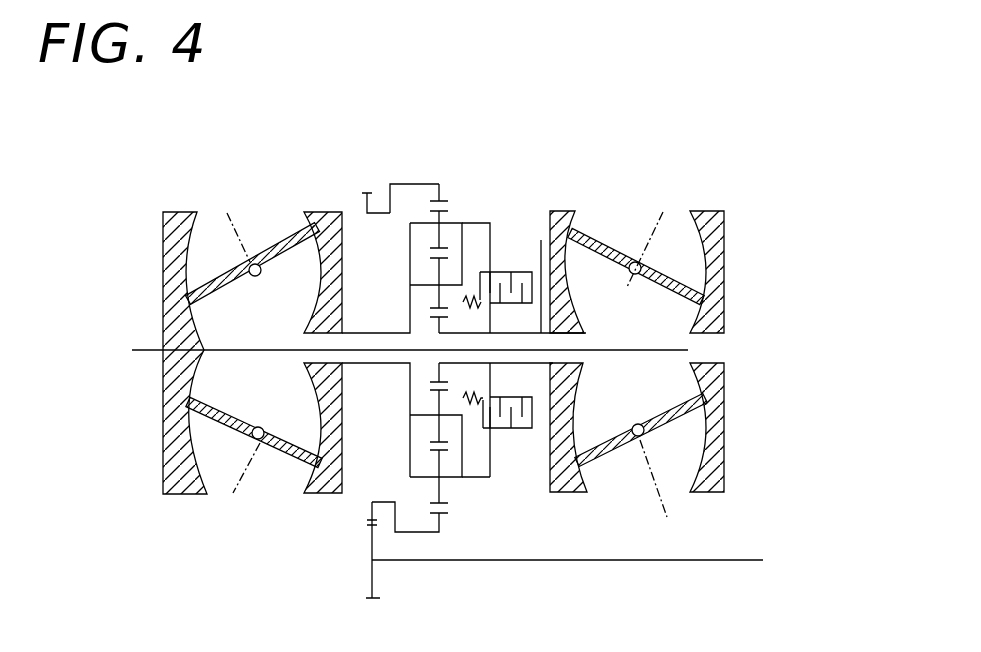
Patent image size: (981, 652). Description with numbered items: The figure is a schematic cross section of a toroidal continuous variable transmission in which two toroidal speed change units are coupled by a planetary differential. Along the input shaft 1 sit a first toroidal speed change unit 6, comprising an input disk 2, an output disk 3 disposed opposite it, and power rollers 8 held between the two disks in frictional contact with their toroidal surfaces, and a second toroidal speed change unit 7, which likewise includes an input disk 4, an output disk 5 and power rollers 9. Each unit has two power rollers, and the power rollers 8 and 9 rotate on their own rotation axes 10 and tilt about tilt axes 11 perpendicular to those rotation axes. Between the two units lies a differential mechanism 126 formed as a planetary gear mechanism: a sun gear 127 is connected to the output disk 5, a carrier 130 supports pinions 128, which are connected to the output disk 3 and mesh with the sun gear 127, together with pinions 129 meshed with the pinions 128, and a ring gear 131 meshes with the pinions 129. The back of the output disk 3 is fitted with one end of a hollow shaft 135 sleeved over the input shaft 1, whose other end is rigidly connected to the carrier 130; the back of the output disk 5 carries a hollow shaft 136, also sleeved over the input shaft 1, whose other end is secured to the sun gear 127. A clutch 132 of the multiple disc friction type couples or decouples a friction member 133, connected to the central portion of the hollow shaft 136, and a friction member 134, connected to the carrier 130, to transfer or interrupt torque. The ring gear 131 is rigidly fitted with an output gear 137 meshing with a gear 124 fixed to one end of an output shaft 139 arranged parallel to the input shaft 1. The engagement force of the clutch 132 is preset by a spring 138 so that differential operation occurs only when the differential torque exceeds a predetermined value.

The input shaft 1 is at (157, 352).
The input disk 2 is at (166, 258).
The output disk 3 is at (328, 232).
The input disk 4 is at (717, 250).
The output disk 5 is at (560, 222).
The toroidal speed change unit 6 is at (254, 313).
The toroidal speed change unit 7 is at (637, 313).
The power rollers 8 is at (254, 351).
The power rollers 9 is at (600, 245).
The rotation axes 10 is at (453, 356).
The tilt axes 11 is at (255, 278).
The gear 124 is at (373, 580).
The differential mechanism 126 is at (422, 182).
The sun gear 127 is at (436, 374).
The pinions 128 is at (437, 297).
The pinions 129 is at (445, 214).
The carrier 130 is at (409, 245).
The ring gear 131 is at (441, 190).
The clutch 132 is at (525, 270).
The friction member 133 is at (527, 430).
The friction member 134 is at (505, 432).
The hollow shaft 135 is at (358, 366).
The hollow shaft 136 is at (541, 240).
The output gear 137 is at (371, 192).
The spring 138 is at (472, 293).
The output shaft 139 is at (554, 560).